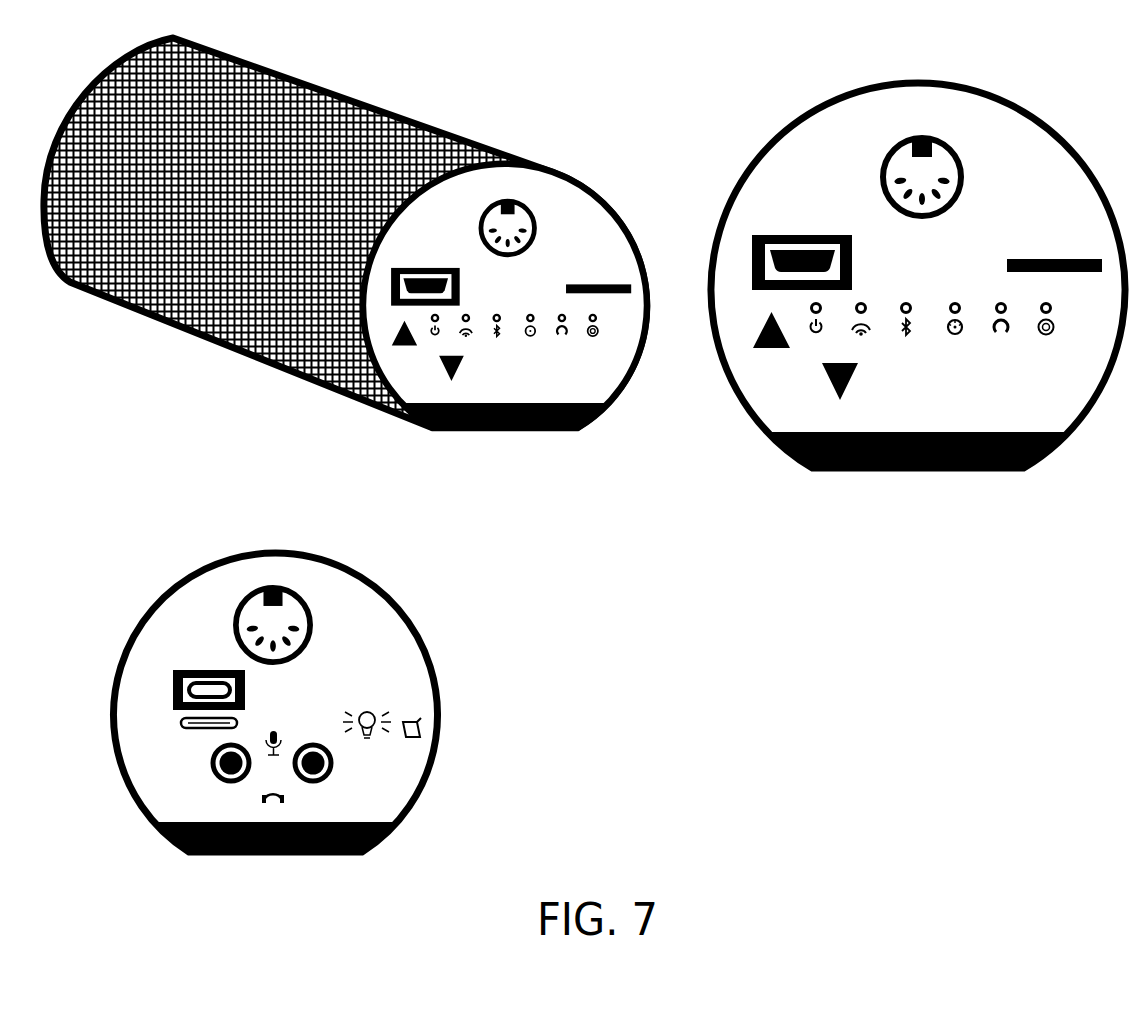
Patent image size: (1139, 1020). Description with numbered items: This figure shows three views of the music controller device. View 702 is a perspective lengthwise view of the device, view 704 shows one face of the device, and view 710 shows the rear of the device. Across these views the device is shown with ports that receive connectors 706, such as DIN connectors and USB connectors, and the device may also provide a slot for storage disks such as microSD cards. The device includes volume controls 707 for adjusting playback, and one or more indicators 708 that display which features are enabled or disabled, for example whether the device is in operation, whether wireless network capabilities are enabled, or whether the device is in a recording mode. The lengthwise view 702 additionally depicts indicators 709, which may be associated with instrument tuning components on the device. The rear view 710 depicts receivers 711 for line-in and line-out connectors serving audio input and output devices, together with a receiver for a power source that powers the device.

The perspective lengthwise view 702 is at (283, 74).
The face view 704 is at (1062, 134).
The connectors 706 is at (413, 247).
The volume controls 707 is at (428, 392).
The indicators 708 is at (493, 354).
The indicators 709 is at (361, 126).
The rear view 710 is at (402, 612).
The receivers 711 is at (231, 777).